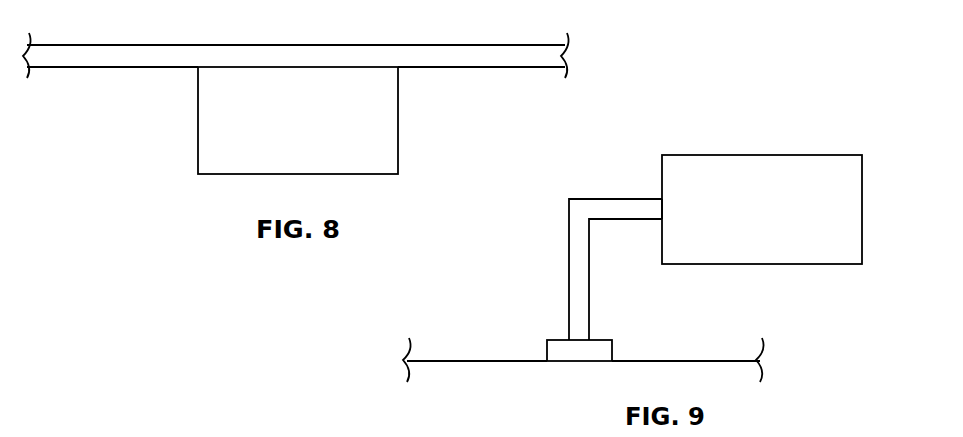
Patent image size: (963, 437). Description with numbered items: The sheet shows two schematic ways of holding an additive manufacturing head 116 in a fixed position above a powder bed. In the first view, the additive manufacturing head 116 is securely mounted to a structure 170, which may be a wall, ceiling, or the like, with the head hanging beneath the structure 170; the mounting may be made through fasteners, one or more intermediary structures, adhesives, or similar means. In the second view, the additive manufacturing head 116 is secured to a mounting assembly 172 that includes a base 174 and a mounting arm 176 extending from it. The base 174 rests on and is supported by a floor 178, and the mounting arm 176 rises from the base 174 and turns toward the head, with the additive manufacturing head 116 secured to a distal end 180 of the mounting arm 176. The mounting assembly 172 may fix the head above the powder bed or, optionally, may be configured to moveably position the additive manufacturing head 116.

In FIG. 8, the additive manufacturing head 116 is at (198, 121).
In FIG. 9, the additive manufacturing head 116 is at (862, 210).
In FIG. 8, the structure 170 is at (453, 45).
In FIG. 9, the mounting assembly 172 is at (569, 254).
In FIG. 9, the base 174 is at (607, 340).
In FIG. 9, the mounting arm 176 is at (569, 199).
In FIG. 9, the floor 178 is at (677, 361).
In FIG. 9, the distal end 180 is at (648, 198).